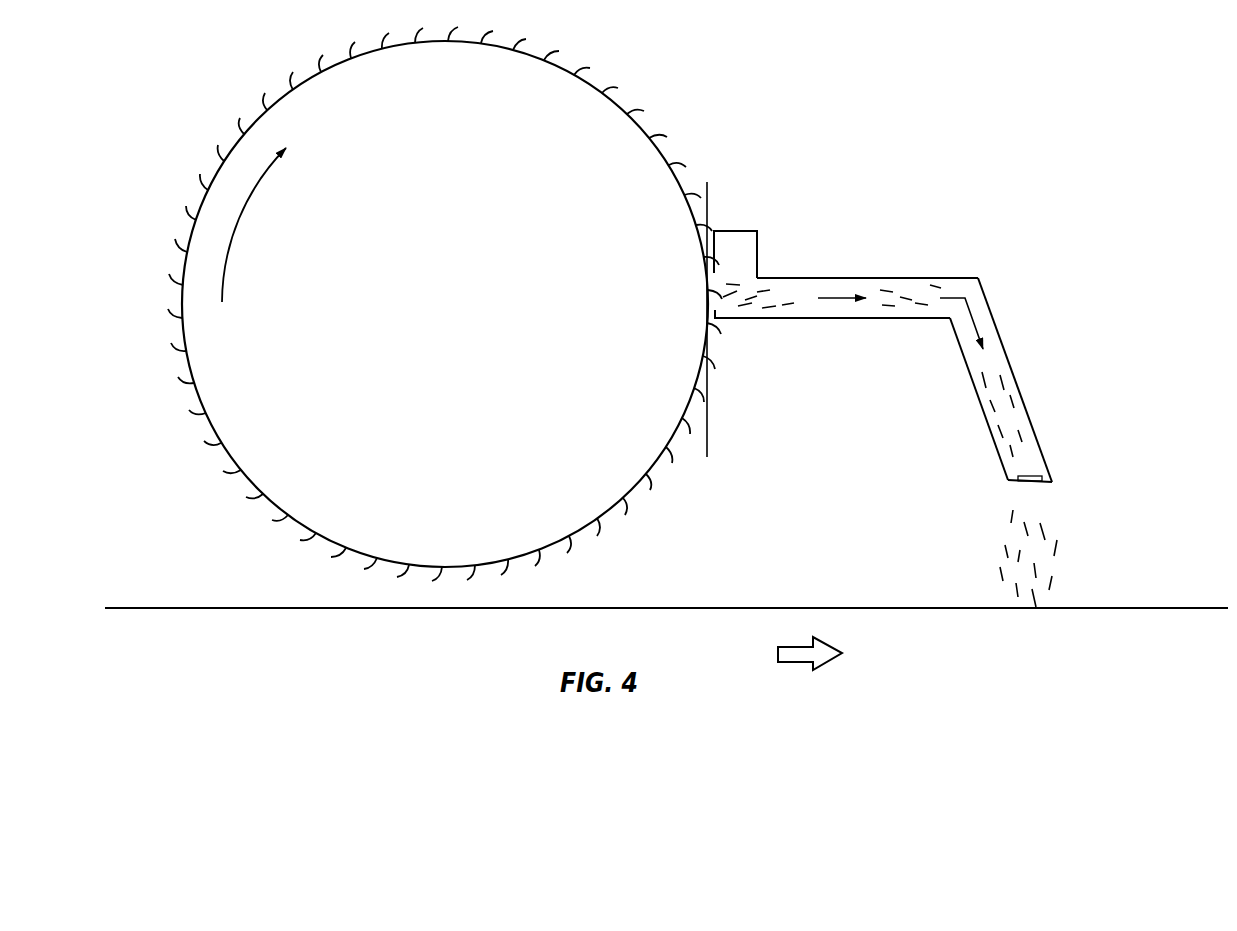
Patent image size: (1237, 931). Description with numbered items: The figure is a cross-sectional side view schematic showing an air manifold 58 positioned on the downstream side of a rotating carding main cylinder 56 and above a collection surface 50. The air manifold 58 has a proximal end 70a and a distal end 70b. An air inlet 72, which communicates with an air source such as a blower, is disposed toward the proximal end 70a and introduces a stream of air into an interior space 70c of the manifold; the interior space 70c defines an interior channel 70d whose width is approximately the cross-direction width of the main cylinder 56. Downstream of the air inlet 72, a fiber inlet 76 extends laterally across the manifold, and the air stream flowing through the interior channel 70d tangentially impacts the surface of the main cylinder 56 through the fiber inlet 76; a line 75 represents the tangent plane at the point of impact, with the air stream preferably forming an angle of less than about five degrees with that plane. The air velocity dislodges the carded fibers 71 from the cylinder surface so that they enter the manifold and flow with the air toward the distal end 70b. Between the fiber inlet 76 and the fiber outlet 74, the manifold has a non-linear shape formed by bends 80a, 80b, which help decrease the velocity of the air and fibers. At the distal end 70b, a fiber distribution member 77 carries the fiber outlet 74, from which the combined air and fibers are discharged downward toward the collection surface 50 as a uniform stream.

The collection surface 50 is at (1171, 604).
The main cylinder 56 is at (640, 155).
The air manifold 58 is at (875, 344).
The proximal end 70a is at (758, 248).
The distal end 70b is at (1047, 458).
The interior space 70c is at (858, 283).
The interior channel 70d is at (997, 347).
The carded fibers 71 is at (937, 293).
The air inlet 72 is at (738, 218).
The fiber outlet 74 is at (1034, 486).
The tangent plane line 75 is at (716, 423).
The fiber inlet 76 is at (705, 297).
The fiber distribution member 77 is at (1033, 427).
The bend 80a is at (719, 323).
The bend 80b is at (972, 285).